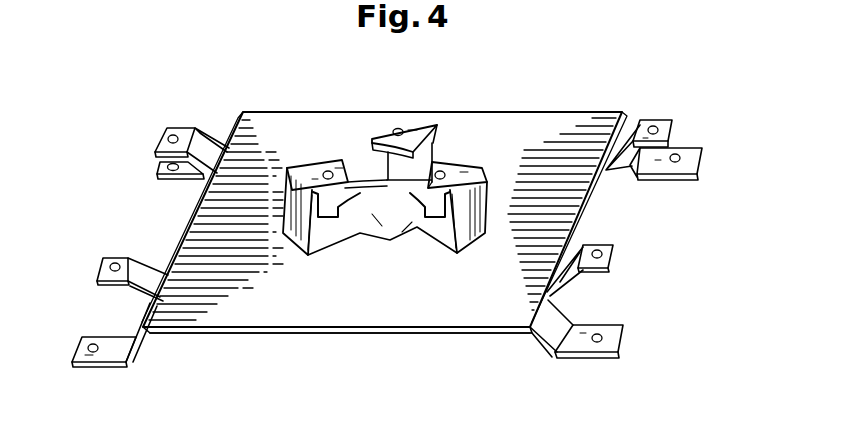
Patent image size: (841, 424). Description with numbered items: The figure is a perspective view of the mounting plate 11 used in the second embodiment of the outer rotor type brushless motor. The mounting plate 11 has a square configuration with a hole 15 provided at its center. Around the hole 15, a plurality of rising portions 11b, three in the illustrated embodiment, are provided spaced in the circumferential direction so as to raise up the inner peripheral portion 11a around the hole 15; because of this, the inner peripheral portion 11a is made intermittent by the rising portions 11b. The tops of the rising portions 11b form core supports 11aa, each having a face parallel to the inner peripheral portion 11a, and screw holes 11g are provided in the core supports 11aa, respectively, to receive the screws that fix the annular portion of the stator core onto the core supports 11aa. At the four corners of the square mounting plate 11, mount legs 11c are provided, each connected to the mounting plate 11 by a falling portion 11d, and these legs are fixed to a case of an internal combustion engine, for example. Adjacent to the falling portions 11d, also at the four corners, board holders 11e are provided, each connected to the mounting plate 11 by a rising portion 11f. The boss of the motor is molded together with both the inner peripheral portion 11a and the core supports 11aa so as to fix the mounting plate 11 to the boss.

The mounting plate 11 is at (303, 338).
The inner peripheral portion 11a is at (368, 180).
The core supports 11aa is at (320, 163).
The rising portions 11b is at (287, 168).
The mount legs 11c is at (175, 170).
The falling portions 11d is at (230, 137).
The board holders 11e is at (172, 130).
The rising portions 11f is at (208, 137).
The threaded holes 11g is at (401, 130).
The hole 15 is at (383, 213).